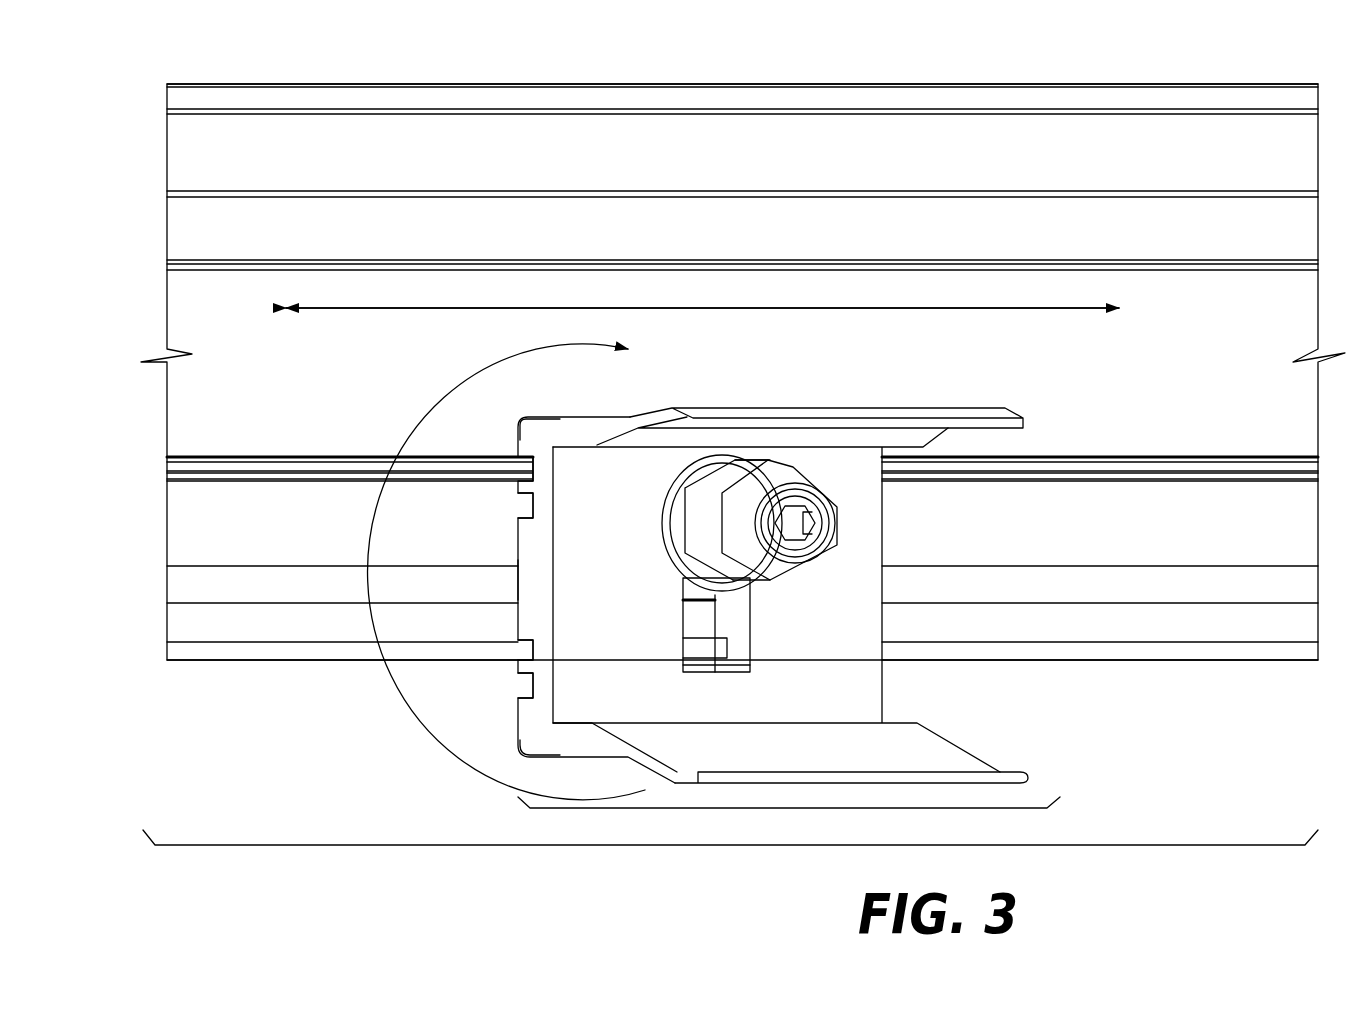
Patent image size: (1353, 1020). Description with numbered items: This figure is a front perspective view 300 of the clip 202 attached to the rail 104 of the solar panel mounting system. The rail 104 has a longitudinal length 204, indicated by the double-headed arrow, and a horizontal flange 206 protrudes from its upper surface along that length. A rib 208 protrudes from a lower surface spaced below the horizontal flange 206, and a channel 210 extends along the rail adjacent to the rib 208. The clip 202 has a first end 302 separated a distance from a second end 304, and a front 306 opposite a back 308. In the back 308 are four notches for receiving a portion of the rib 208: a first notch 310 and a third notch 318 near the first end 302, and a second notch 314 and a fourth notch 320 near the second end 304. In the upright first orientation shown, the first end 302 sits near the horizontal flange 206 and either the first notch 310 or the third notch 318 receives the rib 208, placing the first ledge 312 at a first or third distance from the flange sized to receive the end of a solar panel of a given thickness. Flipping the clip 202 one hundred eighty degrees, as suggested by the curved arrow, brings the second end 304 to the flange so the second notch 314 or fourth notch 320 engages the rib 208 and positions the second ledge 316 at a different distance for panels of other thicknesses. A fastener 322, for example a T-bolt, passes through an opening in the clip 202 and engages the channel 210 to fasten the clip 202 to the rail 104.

The rail 104 is at (701, 339).
The clip 202 is at (740, 810).
The longitudinal length 204 is at (1030, 312).
The horizontal flange 206 is at (795, 84).
The rib 208 is at (255, 455).
The channel 210 is at (253, 530).
The front perspective view 300 is at (696, 848).
The first end 302 is at (551, 583).
The second end 304 is at (545, 760).
The front 306 is at (645, 588).
The back 308 is at (513, 579).
The first notch 310 is at (514, 446).
The first ledge 312 is at (818, 407).
The second notch 314 is at (513, 687).
The second ledge 316 is at (878, 770).
The third notch 318 is at (513, 507).
The fourth notch 320 is at (521, 650).
The fastener 322 is at (850, 508).